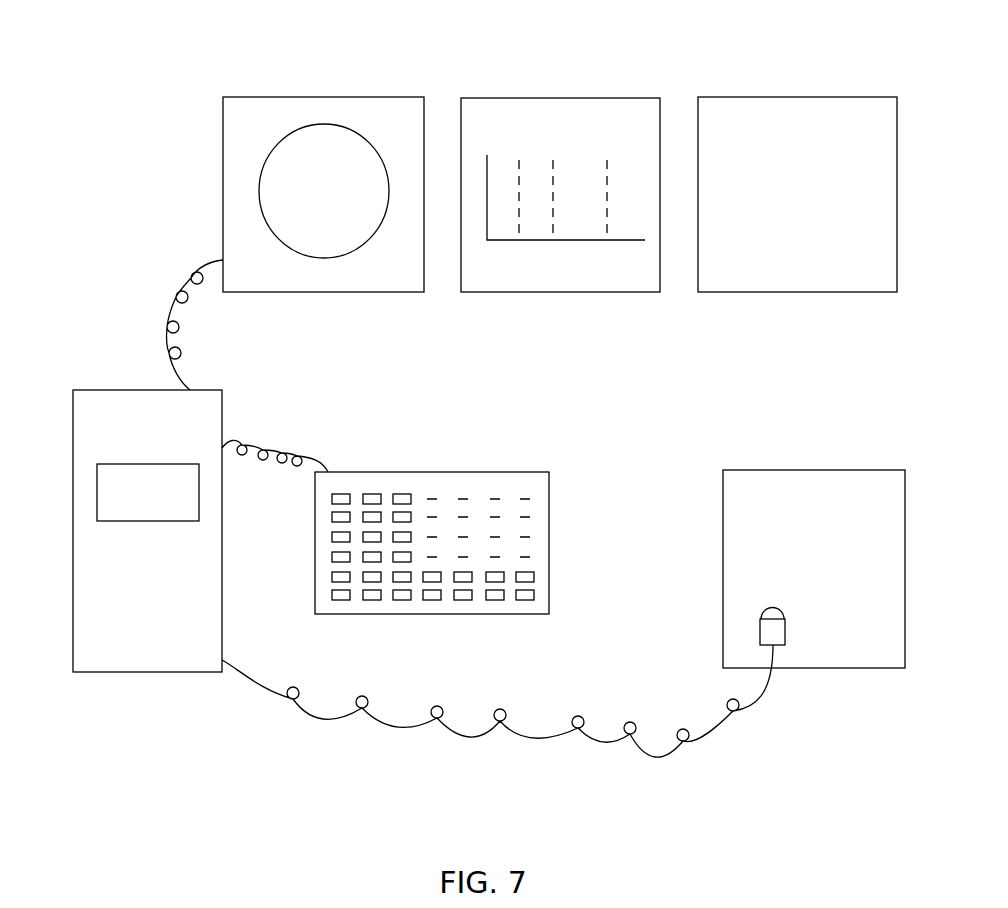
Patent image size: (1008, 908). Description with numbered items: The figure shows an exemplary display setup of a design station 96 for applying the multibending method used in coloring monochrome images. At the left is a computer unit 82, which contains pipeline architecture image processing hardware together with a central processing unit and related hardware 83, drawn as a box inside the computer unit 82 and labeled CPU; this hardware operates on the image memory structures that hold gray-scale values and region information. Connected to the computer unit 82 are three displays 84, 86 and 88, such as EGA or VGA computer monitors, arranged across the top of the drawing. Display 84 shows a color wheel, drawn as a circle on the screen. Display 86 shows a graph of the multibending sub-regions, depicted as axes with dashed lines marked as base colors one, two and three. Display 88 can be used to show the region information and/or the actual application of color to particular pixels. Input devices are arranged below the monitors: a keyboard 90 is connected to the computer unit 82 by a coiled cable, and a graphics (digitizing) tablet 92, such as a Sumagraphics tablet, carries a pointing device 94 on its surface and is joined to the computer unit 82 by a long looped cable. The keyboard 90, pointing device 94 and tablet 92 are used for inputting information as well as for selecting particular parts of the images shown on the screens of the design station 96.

The computer unit 82 is at (100, 390).
The central processing unit and related hardware 83 is at (97, 500).
The display 84 is at (313, 97).
The display 86 is at (568, 98).
The display 88 is at (797, 97).
The keyboard 90 is at (451, 472).
The graphics (digitizing) tablet 92 is at (784, 470).
The pointing device 94 is at (786, 635).
The design station 96 is at (598, 826).